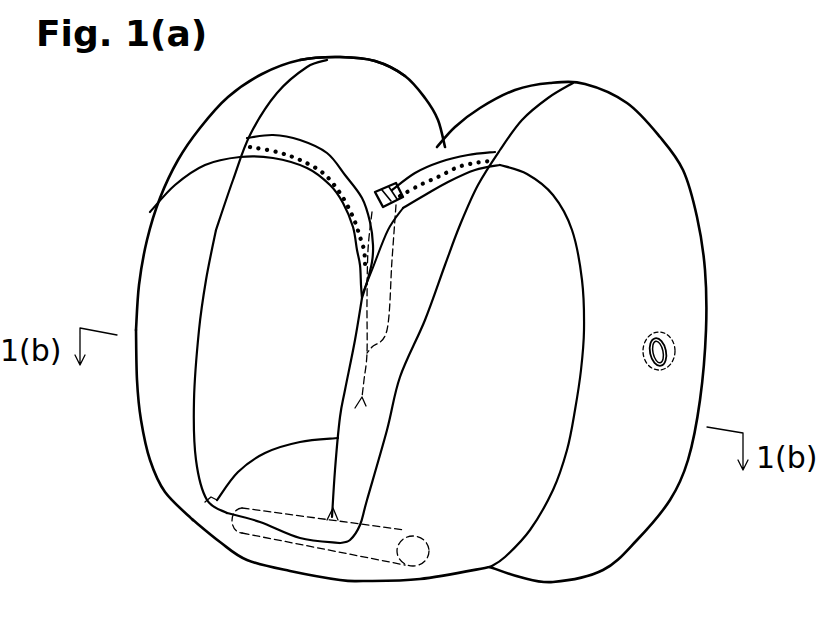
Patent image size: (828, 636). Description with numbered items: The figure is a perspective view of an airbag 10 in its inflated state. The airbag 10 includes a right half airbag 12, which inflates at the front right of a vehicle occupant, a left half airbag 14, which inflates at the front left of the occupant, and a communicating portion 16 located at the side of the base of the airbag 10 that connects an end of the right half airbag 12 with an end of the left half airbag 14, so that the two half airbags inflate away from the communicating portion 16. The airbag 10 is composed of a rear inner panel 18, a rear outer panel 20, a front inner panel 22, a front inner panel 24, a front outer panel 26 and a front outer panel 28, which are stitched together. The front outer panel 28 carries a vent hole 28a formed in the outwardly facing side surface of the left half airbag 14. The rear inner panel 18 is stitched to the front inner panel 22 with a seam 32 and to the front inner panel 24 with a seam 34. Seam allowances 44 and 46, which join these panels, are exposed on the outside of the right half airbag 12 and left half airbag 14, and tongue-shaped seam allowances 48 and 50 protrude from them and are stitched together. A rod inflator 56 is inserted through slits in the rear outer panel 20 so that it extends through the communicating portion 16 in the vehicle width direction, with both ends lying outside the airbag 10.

The airbag 10 is at (140, 490).
The right half airbag 12 is at (420, 76).
The left half airbag 14 is at (650, 107).
The communicating portion 16 is at (297, 487).
The rear inner panel 18 is at (257, 428).
The rear outer panel 20 is at (143, 430).
The front inner panel 22 is at (360, 78).
The front inner panel 24 is at (546, 97).
The front outer panel 26 is at (212, 128).
The front outer panel 28 is at (693, 273).
The vent hole 28a is at (656, 372).
The seam 32 is at (332, 177).
The seam 34 is at (472, 172).
The seam allowance 44 is at (321, 137).
The seam allowance 46 is at (472, 155).
The tongue-shaped seam allowance 48 is at (377, 193).
The tongue-shaped seam allowance 50 is at (399, 191).
The rod inflator 56 is at (380, 552).